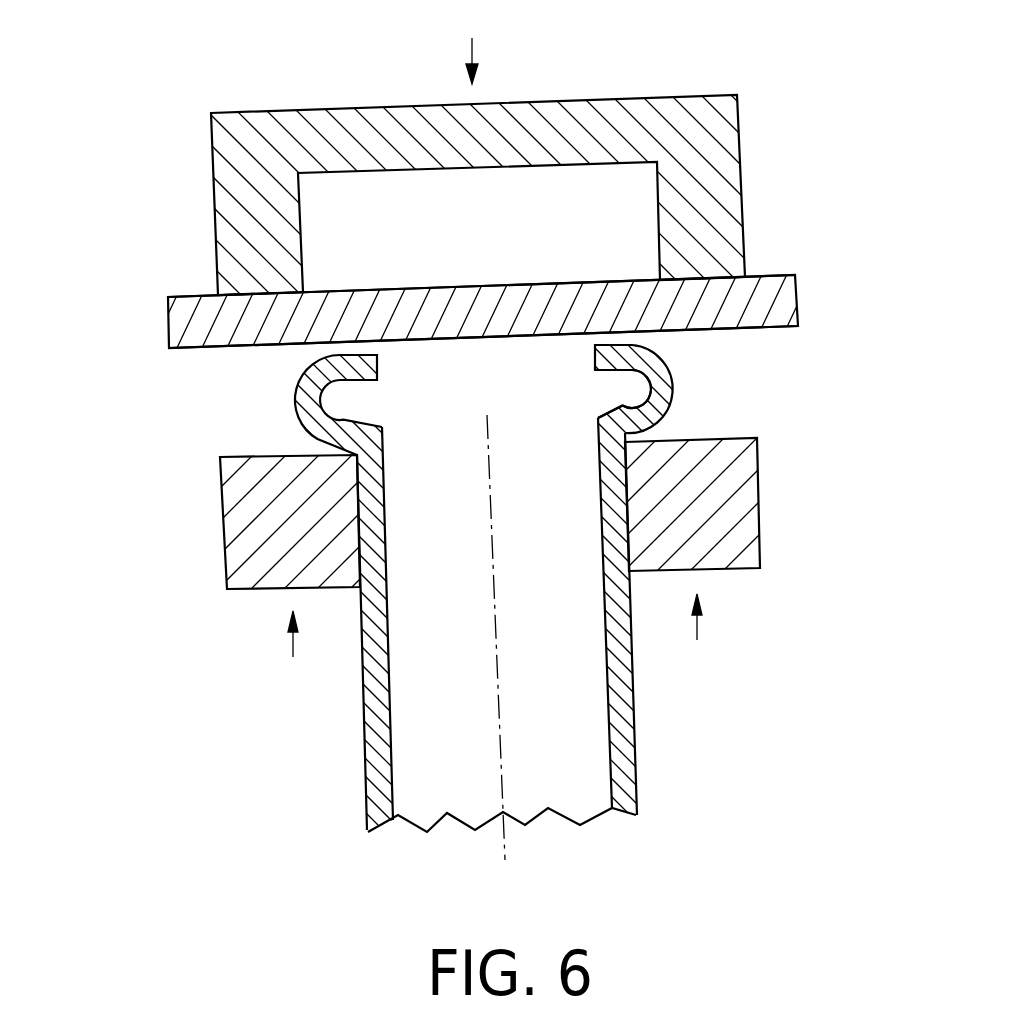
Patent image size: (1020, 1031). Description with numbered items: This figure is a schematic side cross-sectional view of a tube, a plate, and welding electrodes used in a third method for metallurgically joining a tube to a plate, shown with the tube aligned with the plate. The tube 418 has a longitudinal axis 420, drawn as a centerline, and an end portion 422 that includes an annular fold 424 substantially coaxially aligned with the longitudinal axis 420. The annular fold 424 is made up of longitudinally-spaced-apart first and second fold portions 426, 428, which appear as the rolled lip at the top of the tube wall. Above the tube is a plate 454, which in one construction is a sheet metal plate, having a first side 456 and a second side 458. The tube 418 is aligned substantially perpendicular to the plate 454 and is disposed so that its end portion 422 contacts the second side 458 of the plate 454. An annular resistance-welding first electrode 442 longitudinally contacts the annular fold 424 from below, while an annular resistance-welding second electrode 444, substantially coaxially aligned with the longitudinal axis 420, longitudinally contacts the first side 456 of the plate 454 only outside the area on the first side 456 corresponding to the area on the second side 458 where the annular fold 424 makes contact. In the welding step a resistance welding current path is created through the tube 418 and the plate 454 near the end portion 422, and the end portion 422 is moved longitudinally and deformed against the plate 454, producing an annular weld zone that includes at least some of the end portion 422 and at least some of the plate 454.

The tube 418 is at (667, 763).
The longitudinal axis 420 is at (495, 648).
The end portion 422 is at (298, 404).
The annular fold 424 is at (674, 380).
The first fold portion 426 is at (608, 376).
The second fold portion 428 is at (612, 410).
The first electrode 442 is at (745, 495).
The second electrode 444 is at (588, 110).
The plate 454 is at (768, 262).
The first side 456 is at (185, 298).
The second side 458 is at (183, 348).